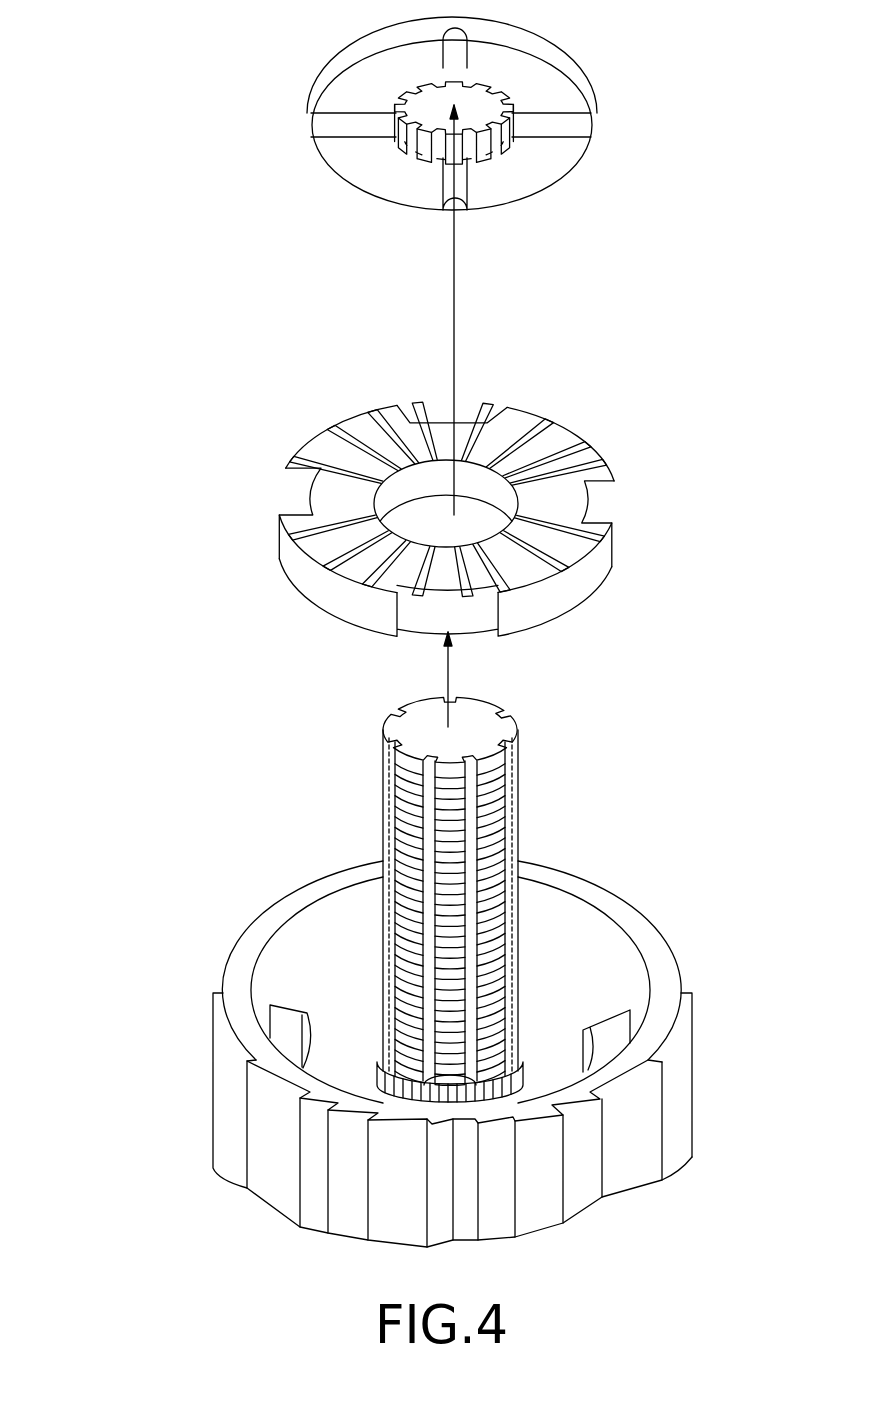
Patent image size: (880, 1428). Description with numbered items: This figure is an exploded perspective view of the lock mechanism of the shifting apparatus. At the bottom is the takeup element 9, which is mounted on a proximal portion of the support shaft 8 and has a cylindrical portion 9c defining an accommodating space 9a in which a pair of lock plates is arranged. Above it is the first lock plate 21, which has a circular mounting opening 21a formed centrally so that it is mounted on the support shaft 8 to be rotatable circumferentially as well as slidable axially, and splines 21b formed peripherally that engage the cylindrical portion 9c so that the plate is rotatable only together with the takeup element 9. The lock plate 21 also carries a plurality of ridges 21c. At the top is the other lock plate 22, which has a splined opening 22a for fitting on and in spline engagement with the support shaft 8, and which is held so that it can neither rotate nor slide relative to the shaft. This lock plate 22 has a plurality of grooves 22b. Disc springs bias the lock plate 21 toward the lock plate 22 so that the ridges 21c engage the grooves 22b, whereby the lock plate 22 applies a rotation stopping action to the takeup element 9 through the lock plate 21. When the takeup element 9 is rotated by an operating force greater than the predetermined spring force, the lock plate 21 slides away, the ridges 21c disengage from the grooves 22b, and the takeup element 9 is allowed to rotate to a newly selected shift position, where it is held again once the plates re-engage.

The support shaft 8 is at (517, 783).
The takeup element 9 is at (475, 1033).
The accommodating space 9a is at (570, 930).
The cylindrical portion 9c is at (226, 967).
The lock plate 21 is at (453, 496).
The circular mounting opening 21a is at (410, 487).
The splines 21b is at (287, 490).
The ridges 21c is at (350, 580).
The lock plate 22 is at (499, 105).
The splined opening 22a is at (480, 113).
The grooves 22b is at (470, 182).